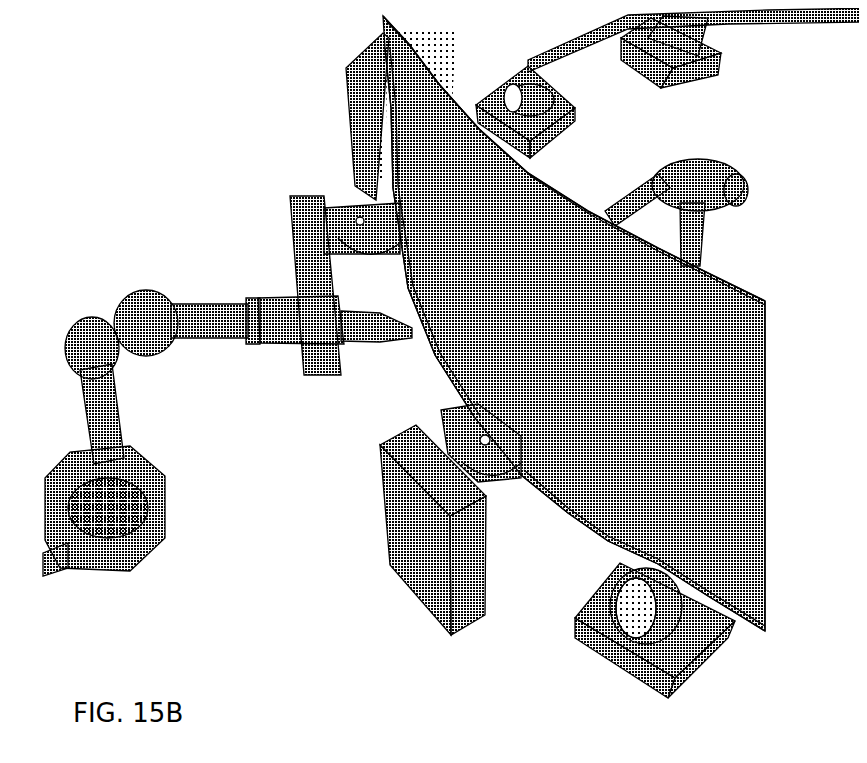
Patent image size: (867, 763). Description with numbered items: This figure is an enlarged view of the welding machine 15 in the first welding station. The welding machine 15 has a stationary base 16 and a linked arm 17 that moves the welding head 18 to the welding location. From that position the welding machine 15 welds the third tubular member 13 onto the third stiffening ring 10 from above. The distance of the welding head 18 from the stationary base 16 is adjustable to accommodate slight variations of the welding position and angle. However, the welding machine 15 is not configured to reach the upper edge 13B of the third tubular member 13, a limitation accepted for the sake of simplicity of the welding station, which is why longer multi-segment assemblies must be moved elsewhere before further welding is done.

The third stiffening ring 10 is at (548, 507).
The third tubular member 13 is at (581, 383).
The second edge of the third tubular member 13B is at (538, 169).
The welding machine 15 is at (227, 361).
The stationary base 16 is at (153, 527).
The linked arm 17 is at (167, 246).
The welding head 18 is at (363, 361).